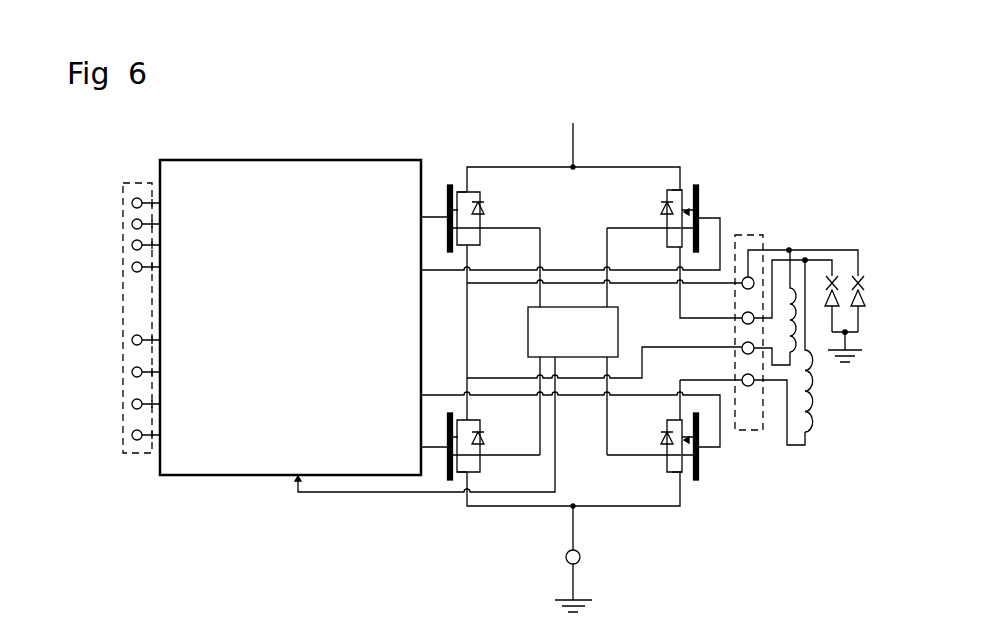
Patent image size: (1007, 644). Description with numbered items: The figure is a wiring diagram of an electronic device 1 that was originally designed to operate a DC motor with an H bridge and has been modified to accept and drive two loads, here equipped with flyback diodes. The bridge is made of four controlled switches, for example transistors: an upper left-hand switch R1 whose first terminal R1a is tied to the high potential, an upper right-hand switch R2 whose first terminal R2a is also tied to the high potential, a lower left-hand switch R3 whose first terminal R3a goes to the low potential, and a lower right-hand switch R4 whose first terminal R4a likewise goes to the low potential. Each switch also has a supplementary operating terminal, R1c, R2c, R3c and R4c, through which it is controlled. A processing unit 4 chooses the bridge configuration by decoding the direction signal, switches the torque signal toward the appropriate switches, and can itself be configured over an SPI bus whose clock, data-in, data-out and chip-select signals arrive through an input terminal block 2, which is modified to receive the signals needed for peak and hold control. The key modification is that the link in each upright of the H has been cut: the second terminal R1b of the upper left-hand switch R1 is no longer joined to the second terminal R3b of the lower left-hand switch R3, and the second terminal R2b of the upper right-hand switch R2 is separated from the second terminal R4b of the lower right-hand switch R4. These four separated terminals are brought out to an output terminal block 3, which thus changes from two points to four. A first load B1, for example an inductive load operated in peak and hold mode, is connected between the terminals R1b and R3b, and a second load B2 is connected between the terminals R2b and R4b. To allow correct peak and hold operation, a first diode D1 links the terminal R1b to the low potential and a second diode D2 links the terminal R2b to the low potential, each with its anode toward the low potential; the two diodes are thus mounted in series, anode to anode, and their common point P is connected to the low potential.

The electronic device 1 is at (318, 124).
The input terminal block 2 is at (137, 452).
The output terminal block 3 is at (752, 432).
The processing unit 4 is at (413, 508).
The upper left-hand switch R1 is at (485, 218).
The first terminal of the upper left-hand switch R1a is at (462, 190).
The second terminal of the upper left-hand switch R1b is at (467, 247).
The operating terminal of the upper left-hand switch R1c is at (442, 217).
The upper right-hand switch R2 is at (660, 218).
The first terminal of the upper right-hand switch R2a is at (681, 190).
The second terminal of the upper right-hand switch R2b is at (681, 247).
The operating terminal of the upper right-hand switch R2c is at (720, 218).
The lower left-hand switch R3 is at (485, 446).
The first terminal of the lower left-hand switch R3a is at (467, 478).
The second terminal of the lower left-hand switch R3b is at (467, 420).
The operating terminal of the lower left-hand switch R3c is at (440, 447).
The lower right-hand switch R4 is at (660, 446).
The first terminal of the lower right-hand switch R4a is at (687, 478).
The second terminal of the lower right-hand switch R4b is at (681, 420).
The operating terminal of the lower right-hand switch R4c is at (710, 447).
The first load B1 is at (790, 250).
The second load B2 is at (807, 432).
The first diode D1 is at (862, 292).
The second diode D2 is at (835, 288).
The common point of the two anodes P is at (846, 334).